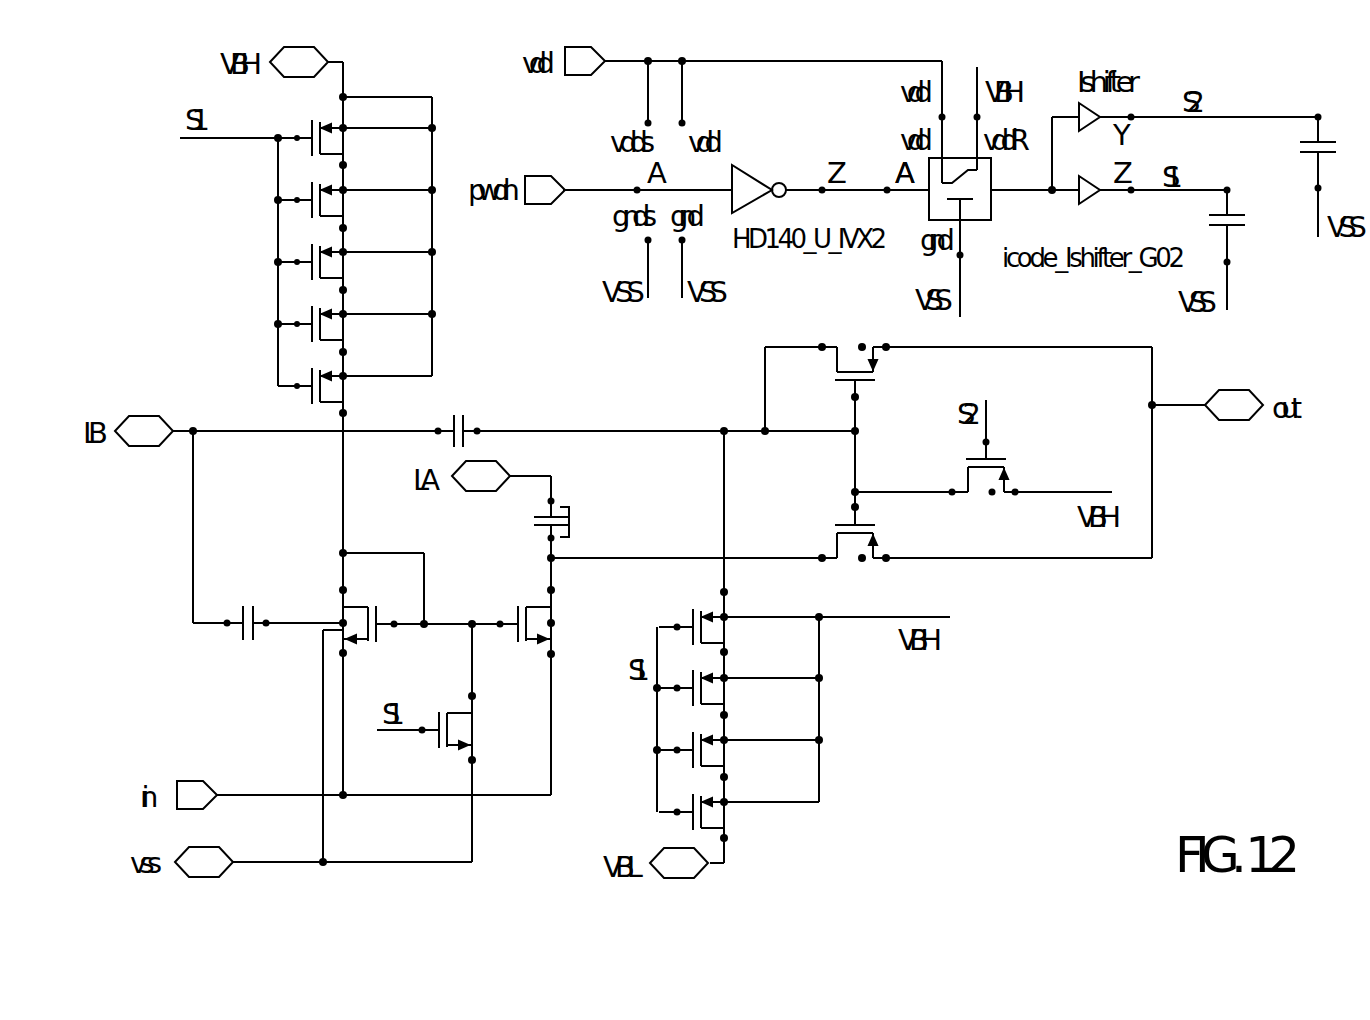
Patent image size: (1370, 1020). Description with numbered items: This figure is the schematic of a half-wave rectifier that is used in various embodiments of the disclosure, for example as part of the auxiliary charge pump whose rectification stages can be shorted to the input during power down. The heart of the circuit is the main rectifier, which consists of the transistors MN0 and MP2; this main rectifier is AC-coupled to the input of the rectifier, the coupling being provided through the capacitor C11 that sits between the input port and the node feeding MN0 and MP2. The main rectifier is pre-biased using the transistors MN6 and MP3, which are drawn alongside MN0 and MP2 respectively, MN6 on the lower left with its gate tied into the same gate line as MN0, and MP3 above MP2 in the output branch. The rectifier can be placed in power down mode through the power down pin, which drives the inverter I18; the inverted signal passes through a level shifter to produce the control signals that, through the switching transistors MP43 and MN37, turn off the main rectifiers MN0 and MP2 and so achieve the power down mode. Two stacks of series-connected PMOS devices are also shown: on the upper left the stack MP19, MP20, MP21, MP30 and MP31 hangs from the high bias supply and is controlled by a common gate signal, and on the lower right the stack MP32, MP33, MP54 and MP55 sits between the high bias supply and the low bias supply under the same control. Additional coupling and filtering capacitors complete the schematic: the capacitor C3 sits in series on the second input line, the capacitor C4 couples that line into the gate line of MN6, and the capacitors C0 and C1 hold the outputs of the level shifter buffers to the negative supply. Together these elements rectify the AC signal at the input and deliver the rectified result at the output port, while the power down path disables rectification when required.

The PMOS transistor MP19 is at (338, 130).
The PMOS transistor MP20 is at (338, 192).
The PMOS transistor MP21 is at (338, 253).
The PMOS transistor MP30 is at (338, 315).
The PMOS transistor MP31 is at (338, 377).
The PMOS transistor MP32 is at (721, 616).
The PMOS transistor MP33 is at (721, 678).
The PMOS transistor MP54 is at (721, 740).
The PMOS transistor MP55 is at (721, 802).
The pre-bias transistor MN6 is at (337, 617).
The main rectifier transistor MN0 is at (559, 619).
The NMOS transistor MN37 is at (479, 730).
The pre-bias transistor MP3 is at (865, 348).
The main rectifier transistor MP2 is at (865, 561).
The PMOS transistor MP43 is at (996, 495).
The capacitor C3 is at (436, 422).
The capacitor C4 is at (228, 612).
The capacitor array C11 1:0 C11 is at (595, 508).
The capacitor C0 is at (1246, 225).
The capacitor C1 is at (1334, 150).
The inverter I18 (HD140_U_IVX2) I18 is at (775, 165).